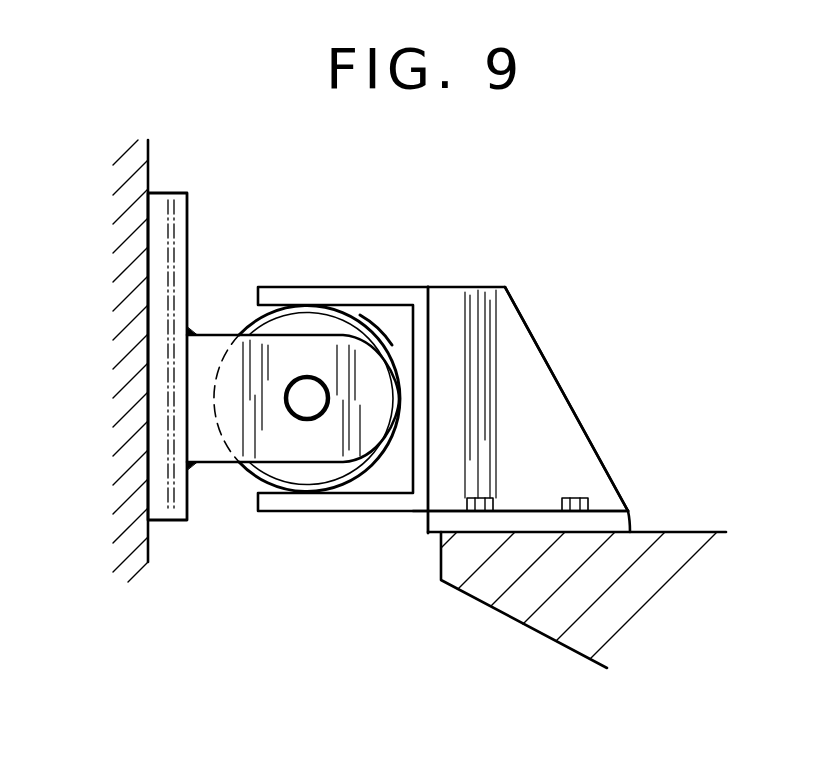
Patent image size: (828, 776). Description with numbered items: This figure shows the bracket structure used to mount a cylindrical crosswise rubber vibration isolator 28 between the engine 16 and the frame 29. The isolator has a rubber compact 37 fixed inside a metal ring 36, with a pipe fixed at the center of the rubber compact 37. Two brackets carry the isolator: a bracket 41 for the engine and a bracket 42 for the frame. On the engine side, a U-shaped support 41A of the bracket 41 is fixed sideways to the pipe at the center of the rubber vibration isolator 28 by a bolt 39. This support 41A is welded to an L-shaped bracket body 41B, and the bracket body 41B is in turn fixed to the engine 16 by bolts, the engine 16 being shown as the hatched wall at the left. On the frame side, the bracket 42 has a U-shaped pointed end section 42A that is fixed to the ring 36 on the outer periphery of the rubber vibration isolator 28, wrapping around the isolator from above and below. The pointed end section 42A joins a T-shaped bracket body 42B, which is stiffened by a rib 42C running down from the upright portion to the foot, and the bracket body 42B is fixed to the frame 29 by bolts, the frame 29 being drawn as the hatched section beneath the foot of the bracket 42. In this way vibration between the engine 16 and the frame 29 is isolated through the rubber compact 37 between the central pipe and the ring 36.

The engine 16 is at (125, 281).
The rubber vibration isolator 28 is at (240, 468).
The frame 29 is at (547, 615).
The ring 36 is at (378, 325).
The rubber compact 37 is at (318, 316).
The bolt 39 is at (305, 412).
The bracket 41 is at (207, 248).
The U-shaped support 41A is at (230, 335).
The L-shaped bracket body 41B is at (174, 193).
The bracket 42 is at (550, 338).
The U-shaped pointed end section 42A is at (413, 287).
The T-shaped bracket body 42B is at (465, 523).
The rib 42C is at (597, 441).